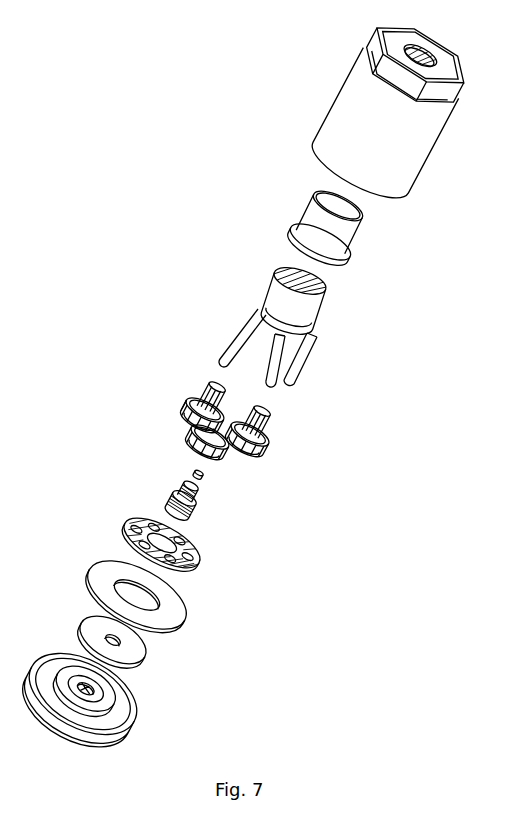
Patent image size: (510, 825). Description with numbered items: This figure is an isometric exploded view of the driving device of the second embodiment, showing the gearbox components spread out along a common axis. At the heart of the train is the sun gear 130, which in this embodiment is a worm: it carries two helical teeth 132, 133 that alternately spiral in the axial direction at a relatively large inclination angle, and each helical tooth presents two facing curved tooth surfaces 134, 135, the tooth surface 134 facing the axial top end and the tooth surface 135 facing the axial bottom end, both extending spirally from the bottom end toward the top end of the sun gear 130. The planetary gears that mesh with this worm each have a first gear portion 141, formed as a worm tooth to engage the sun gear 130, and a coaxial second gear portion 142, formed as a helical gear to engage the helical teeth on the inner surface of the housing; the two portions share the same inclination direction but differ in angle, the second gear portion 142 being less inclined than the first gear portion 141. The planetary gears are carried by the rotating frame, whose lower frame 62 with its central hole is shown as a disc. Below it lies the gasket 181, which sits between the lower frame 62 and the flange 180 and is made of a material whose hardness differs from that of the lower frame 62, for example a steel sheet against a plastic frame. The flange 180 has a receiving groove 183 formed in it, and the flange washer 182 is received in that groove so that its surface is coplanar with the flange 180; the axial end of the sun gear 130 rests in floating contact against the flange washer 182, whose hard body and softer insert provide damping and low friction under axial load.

The lower frame 62 is at (187, 567).
The sun gear 130 is at (200, 484).
The helical tooth 132 is at (169, 502).
The helical tooth 133 is at (175, 500).
The tooth surface 134 is at (195, 498).
The tooth surface 135 is at (193, 518).
The first gear portion 141 is at (183, 397).
The second gear portion 142 is at (207, 386).
The flange 180 is at (133, 722).
The gasket 181 is at (173, 614).
The flange washer 182 is at (138, 656).
The receiving groove 183 is at (65, 665).